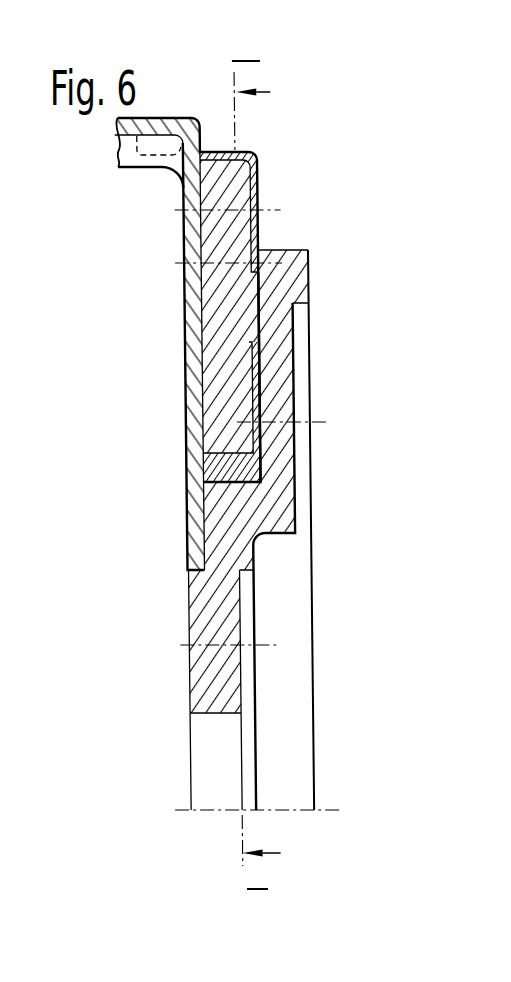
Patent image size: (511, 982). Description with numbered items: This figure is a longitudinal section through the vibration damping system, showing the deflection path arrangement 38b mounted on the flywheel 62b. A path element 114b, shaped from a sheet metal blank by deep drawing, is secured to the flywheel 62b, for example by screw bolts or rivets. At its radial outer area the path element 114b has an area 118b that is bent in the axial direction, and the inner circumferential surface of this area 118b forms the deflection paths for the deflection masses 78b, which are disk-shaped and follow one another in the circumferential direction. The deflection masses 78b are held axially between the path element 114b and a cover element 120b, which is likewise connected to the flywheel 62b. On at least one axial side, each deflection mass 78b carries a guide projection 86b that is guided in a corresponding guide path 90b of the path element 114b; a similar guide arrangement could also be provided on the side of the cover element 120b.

The deflection path arrangement 38b is at (160, 466).
The flywheel 62b is at (309, 298).
The deflection masses 78b is at (250, 200).
The guide projection 86b is at (258, 335).
The guide path 90b is at (261, 280).
The path element 114b is at (260, 403).
The axially bent area 118b is at (221, 150).
The cover element 120b is at (184, 392).